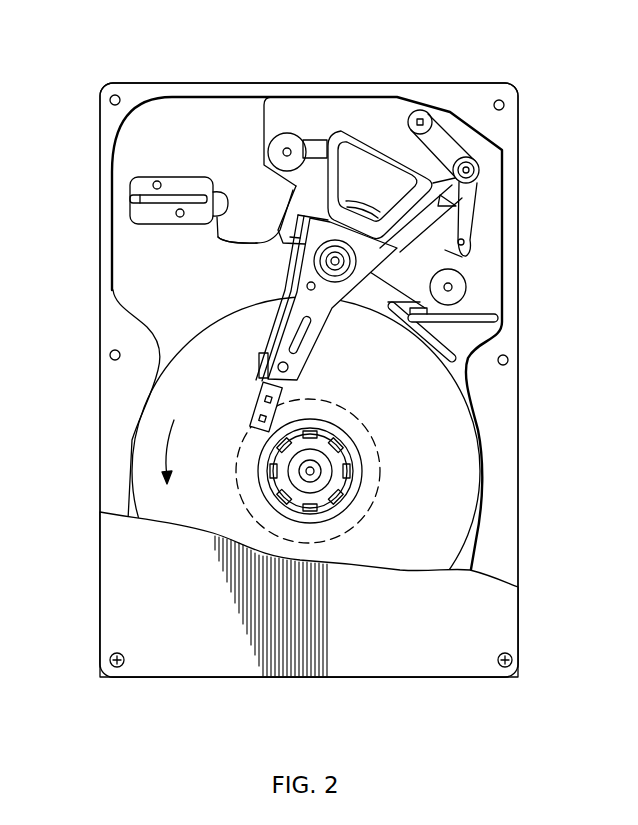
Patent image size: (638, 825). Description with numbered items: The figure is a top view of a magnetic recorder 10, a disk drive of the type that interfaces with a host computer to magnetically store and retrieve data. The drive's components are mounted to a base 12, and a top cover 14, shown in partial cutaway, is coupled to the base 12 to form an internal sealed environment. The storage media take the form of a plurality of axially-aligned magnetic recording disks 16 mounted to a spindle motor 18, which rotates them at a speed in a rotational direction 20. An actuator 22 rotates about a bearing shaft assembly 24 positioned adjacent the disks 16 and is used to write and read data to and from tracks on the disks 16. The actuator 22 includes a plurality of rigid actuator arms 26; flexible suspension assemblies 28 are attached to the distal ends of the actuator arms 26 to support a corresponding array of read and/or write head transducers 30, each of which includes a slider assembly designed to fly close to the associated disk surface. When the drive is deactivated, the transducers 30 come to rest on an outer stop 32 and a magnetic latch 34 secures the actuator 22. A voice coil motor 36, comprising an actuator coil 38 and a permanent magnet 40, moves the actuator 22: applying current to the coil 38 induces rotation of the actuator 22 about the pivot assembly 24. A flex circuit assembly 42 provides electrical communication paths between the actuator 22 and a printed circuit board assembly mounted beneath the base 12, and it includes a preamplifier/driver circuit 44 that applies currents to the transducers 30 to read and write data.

The magnetic recorder 10 is at (137, 58).
The base 12 is at (132, 243).
The top cover 14 is at (117, 548).
The magnetic recording disks 16 is at (472, 478).
The spindle motor 18 is at (348, 452).
The rotational direction 20 is at (132, 437).
The actuator 22 is at (400, 358).
The bearing shaft assembly 24 is at (440, 292).
The actuator arms 26 is at (400, 383).
The flexible suspension assemblies 28 is at (258, 392).
The head transducers 30 is at (250, 424).
The outer stop 32 is at (395, 527).
The magnetic latch 34 is at (468, 203).
The voice coil motor 36 is at (371, 126).
The actuator coil 38 is at (347, 128).
The permanent magnet 40 is at (357, 262).
The flex circuit assembly 42 is at (222, 257).
The preamplifier/driver circuit 44 is at (280, 288).